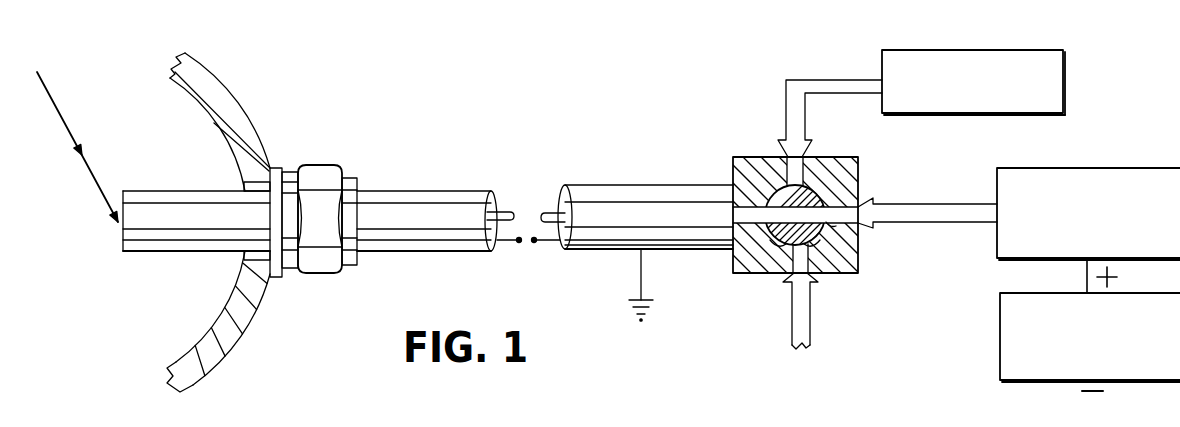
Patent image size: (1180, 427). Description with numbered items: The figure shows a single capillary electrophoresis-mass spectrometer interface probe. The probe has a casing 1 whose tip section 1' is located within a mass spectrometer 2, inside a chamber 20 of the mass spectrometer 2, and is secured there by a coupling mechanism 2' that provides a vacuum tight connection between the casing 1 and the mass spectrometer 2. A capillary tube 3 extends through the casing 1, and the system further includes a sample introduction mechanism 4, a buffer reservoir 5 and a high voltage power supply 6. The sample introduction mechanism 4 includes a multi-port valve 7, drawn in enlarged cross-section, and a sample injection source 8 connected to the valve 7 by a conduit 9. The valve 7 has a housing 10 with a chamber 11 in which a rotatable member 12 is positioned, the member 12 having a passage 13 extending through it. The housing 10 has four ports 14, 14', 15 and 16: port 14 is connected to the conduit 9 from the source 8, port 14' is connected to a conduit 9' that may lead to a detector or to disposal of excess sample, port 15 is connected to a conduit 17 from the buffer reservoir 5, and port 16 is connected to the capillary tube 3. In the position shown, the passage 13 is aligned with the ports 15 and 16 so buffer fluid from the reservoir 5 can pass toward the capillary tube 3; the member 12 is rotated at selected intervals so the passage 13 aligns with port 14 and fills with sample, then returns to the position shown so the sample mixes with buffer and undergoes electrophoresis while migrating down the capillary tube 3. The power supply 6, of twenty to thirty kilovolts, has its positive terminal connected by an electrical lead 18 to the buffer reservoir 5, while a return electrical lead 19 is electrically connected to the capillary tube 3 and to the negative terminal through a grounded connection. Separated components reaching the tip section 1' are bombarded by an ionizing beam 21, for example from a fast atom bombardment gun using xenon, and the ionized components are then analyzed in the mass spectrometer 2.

The casing 1 is at (427, 202).
The tip section 1' is at (196, 203).
The mass spectrometer 2 is at (227, 222).
The coupling mechanism 2' is at (313, 195).
The capillary tube 3 is at (542, 213).
The sample introduction mechanism 4 is at (757, 133).
The buffer reservoir 5 is at (1133, 168).
The high voltage power supply 6 is at (1000, 320).
The multi-port valve 7 is at (862, 316).
The sample injection source 8 is at (1066, 88).
The conduit 9 is at (830, 101).
The conduit 9' is at (818, 319).
The housing 10 is at (733, 270).
The chamber 11 is at (788, 246).
The rotatable member 12 is at (802, 197).
The passage 13 is at (808, 246).
The port 14 is at (820, 152).
The port 14' is at (776, 293).
The port 15 is at (843, 214).
The port 16 is at (733, 190).
The conduit 17 is at (932, 184).
The electrical lead 18 is at (1087, 263).
The return electrical lead 19 is at (545, 243).
The chamber 20 is at (148, 320).
The ionizing beam 21 is at (65, 114).